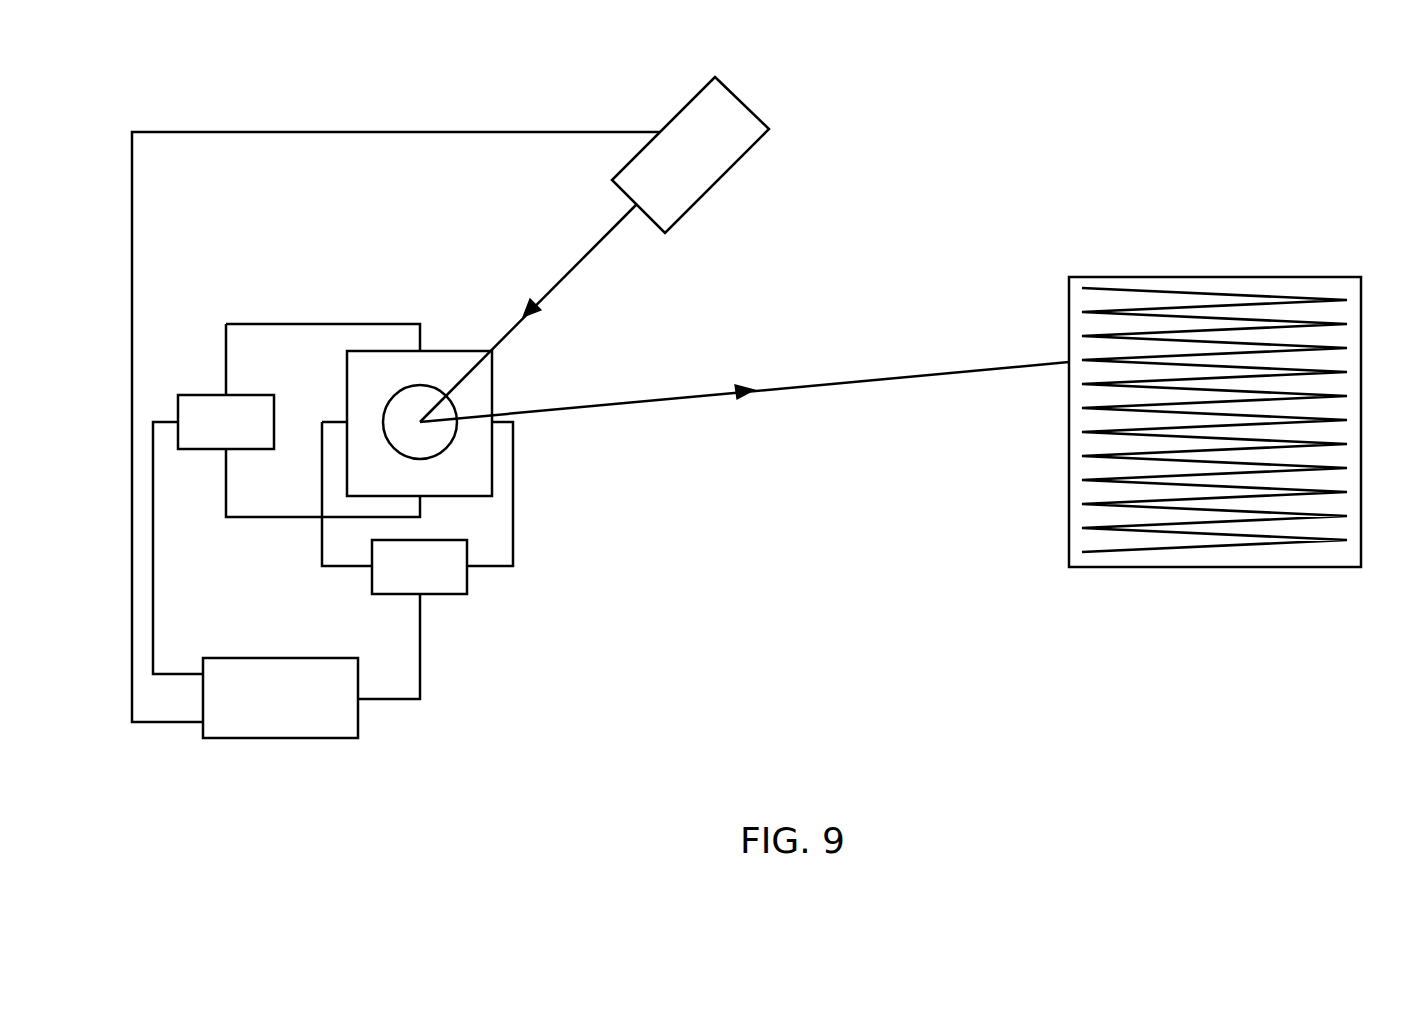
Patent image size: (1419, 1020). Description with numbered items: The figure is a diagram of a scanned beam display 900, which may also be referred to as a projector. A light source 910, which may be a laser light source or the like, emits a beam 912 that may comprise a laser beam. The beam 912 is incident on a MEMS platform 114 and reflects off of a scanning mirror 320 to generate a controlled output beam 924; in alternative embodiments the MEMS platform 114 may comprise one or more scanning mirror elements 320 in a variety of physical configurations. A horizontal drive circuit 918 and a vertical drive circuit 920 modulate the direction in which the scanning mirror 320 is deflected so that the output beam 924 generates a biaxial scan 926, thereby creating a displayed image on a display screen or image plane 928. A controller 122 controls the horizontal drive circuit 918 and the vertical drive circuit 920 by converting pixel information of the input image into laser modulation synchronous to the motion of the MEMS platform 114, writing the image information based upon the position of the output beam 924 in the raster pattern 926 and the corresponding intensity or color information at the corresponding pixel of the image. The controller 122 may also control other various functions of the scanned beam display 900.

The scanned beam display 900 is at (1252, 114).
The light source 910 is at (747, 105).
The beam 912 is at (578, 262).
The MEMS platform 114 is at (456, 350).
The scanning mirror 320 is at (440, 453).
The horizontal drive circuit 918 is at (217, 395).
The vertical drive circuit 920 is at (467, 575).
The controller 122 is at (358, 722).
The output beam 924 is at (675, 398).
The biaxial scan 926 is at (1261, 295).
The display screen 928 is at (1361, 300).